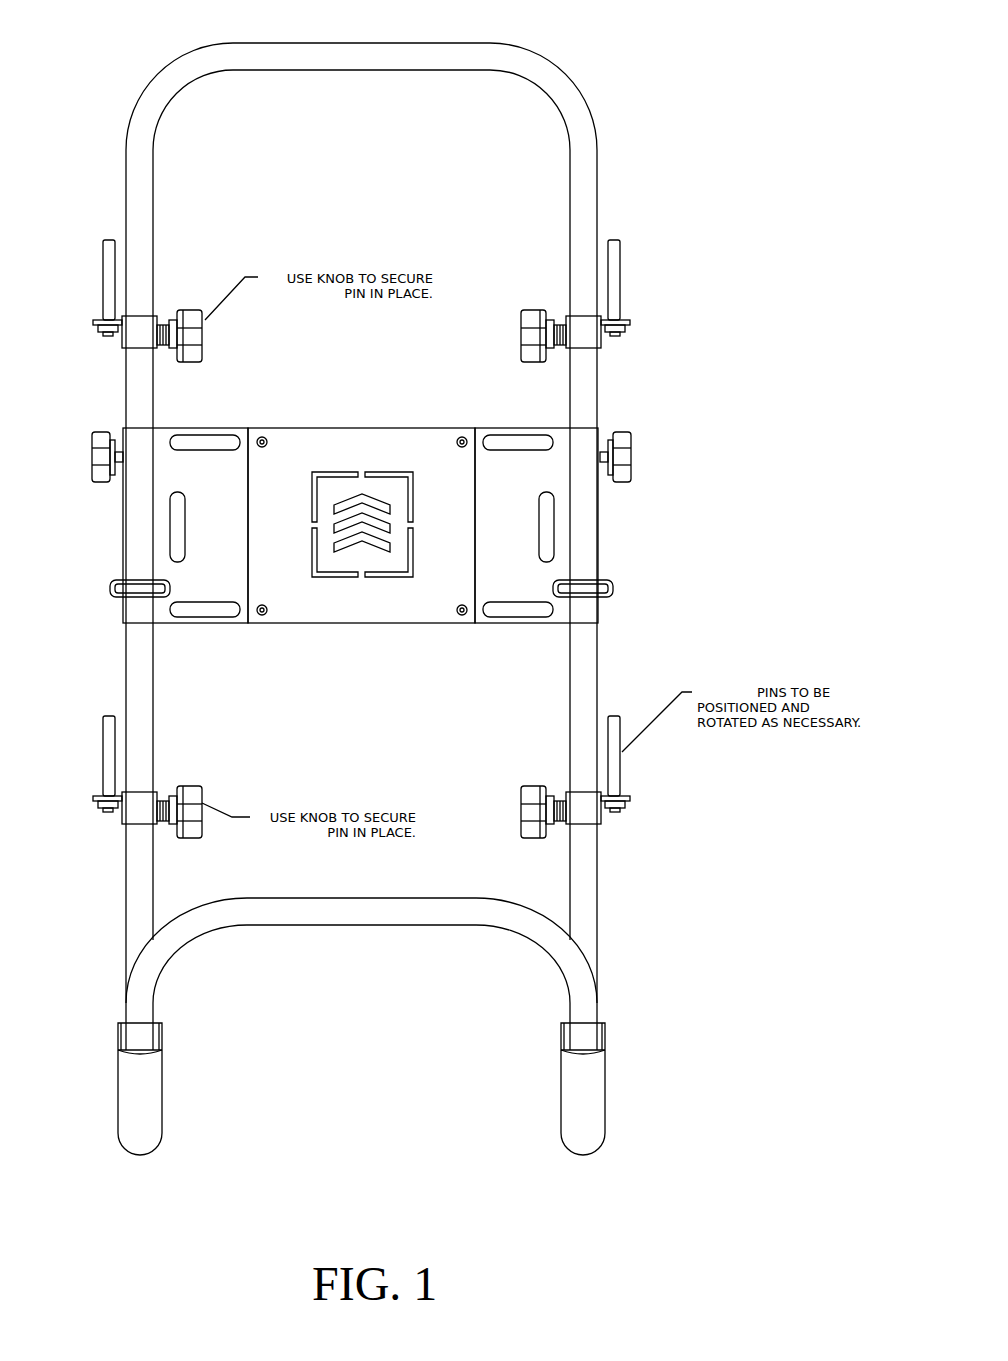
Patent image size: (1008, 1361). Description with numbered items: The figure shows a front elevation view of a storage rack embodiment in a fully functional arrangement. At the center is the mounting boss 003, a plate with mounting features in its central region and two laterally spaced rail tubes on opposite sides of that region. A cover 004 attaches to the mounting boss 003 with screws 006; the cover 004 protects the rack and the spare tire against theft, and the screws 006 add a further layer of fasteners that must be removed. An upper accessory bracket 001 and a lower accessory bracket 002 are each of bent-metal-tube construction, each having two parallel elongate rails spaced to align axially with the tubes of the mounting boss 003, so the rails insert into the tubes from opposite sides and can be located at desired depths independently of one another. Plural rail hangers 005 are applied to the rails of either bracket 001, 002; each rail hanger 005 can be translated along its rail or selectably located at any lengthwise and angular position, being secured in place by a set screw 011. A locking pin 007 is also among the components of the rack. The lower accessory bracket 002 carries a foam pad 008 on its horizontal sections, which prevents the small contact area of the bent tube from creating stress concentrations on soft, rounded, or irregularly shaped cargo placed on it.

The upper accessory bracket 001 is at (377, 60).
The lower accessory bracket 002 is at (238, 912).
The mounting boss 003 is at (203, 428).
The cover 004 is at (331, 428).
The rail hanger 005 is at (100, 320).
The screw 006 is at (460, 440).
The locking pin 007 is at (120, 582).
The foam pad 008 is at (562, 1128).
The set screw 011 is at (93, 440).